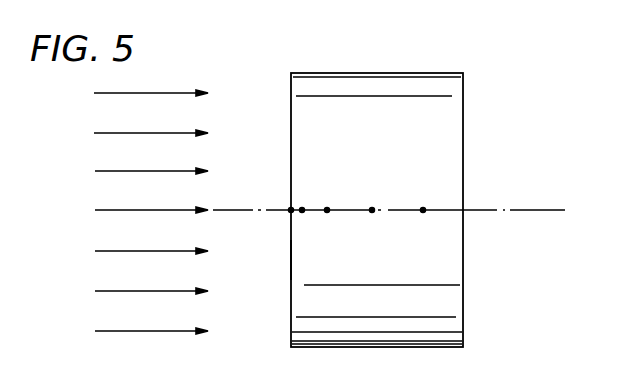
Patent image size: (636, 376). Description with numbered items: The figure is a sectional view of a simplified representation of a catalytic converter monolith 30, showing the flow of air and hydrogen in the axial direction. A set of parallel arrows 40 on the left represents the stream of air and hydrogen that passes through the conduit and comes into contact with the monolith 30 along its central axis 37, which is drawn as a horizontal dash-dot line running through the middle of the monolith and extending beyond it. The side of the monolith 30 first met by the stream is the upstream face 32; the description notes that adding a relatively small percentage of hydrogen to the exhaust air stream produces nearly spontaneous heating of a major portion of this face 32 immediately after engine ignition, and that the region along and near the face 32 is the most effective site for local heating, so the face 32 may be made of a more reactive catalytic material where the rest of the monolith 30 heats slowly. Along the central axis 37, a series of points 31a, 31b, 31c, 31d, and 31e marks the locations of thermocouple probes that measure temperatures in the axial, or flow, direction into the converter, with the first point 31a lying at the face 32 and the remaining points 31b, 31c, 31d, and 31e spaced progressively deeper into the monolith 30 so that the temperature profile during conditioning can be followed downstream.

The catalytic converter monolith 30 is at (463, 110).
The thermocouple probe location point 31a is at (291, 210).
The thermocouple probe location point 31b is at (302, 210).
The thermocouple probe location point 31c is at (327, 212).
The thermocouple probe location point 31d is at (372, 210).
The thermocouple probe location point 31e is at (423, 212).
The face 32 is at (291, 258).
The central axis 37 is at (555, 209).
The arrows 40 is at (110, 194).